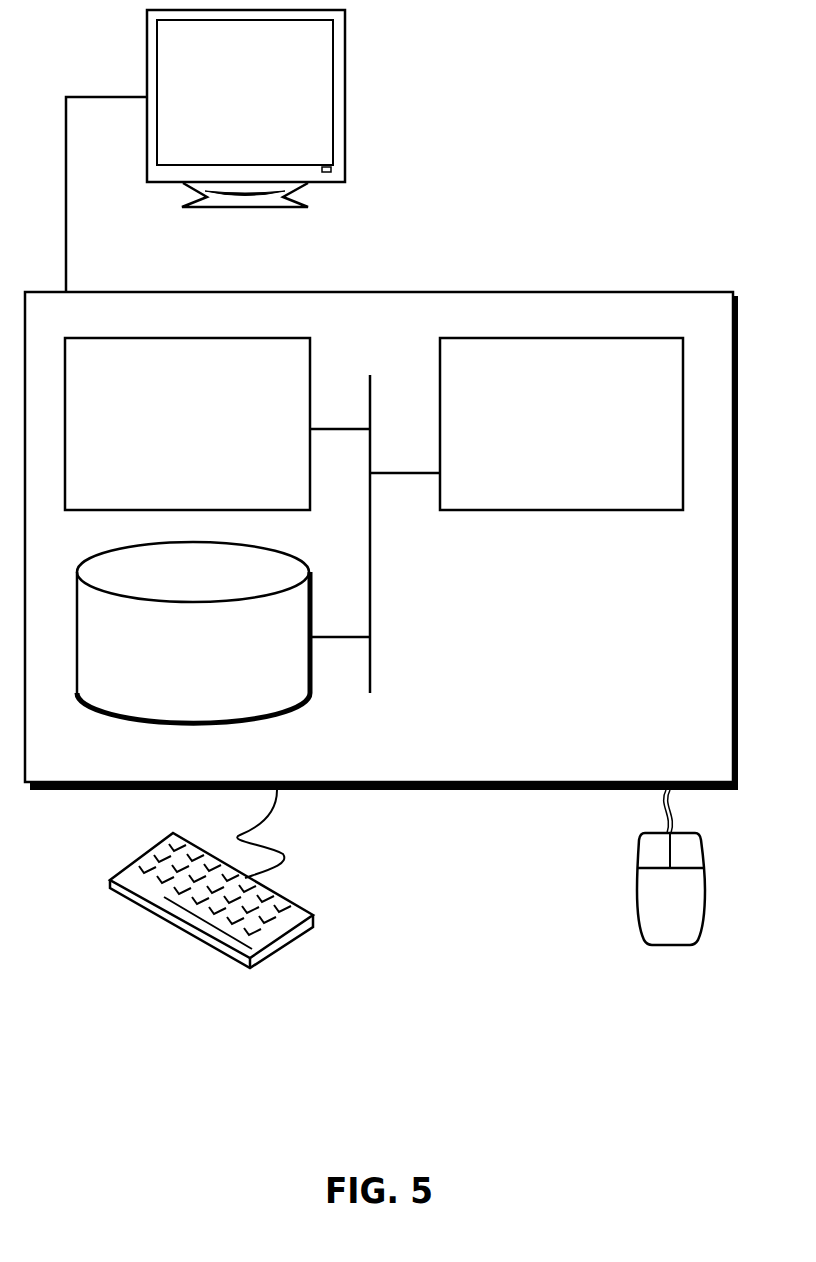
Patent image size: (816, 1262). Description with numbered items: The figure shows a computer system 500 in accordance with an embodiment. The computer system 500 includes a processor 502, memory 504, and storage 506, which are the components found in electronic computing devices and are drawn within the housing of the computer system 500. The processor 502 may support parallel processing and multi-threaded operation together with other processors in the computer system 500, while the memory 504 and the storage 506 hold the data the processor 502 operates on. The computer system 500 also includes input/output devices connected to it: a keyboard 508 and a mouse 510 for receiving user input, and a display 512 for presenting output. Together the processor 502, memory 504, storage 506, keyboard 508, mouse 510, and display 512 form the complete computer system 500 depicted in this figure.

The computer system 500 is at (428, 258).
The processor 502 is at (543, 437).
The memory 504 is at (212, 436).
The storage 506 is at (174, 664).
The keyboard 508 is at (130, 903).
The mouse 510 is at (646, 912).
The display 512 is at (246, 124).